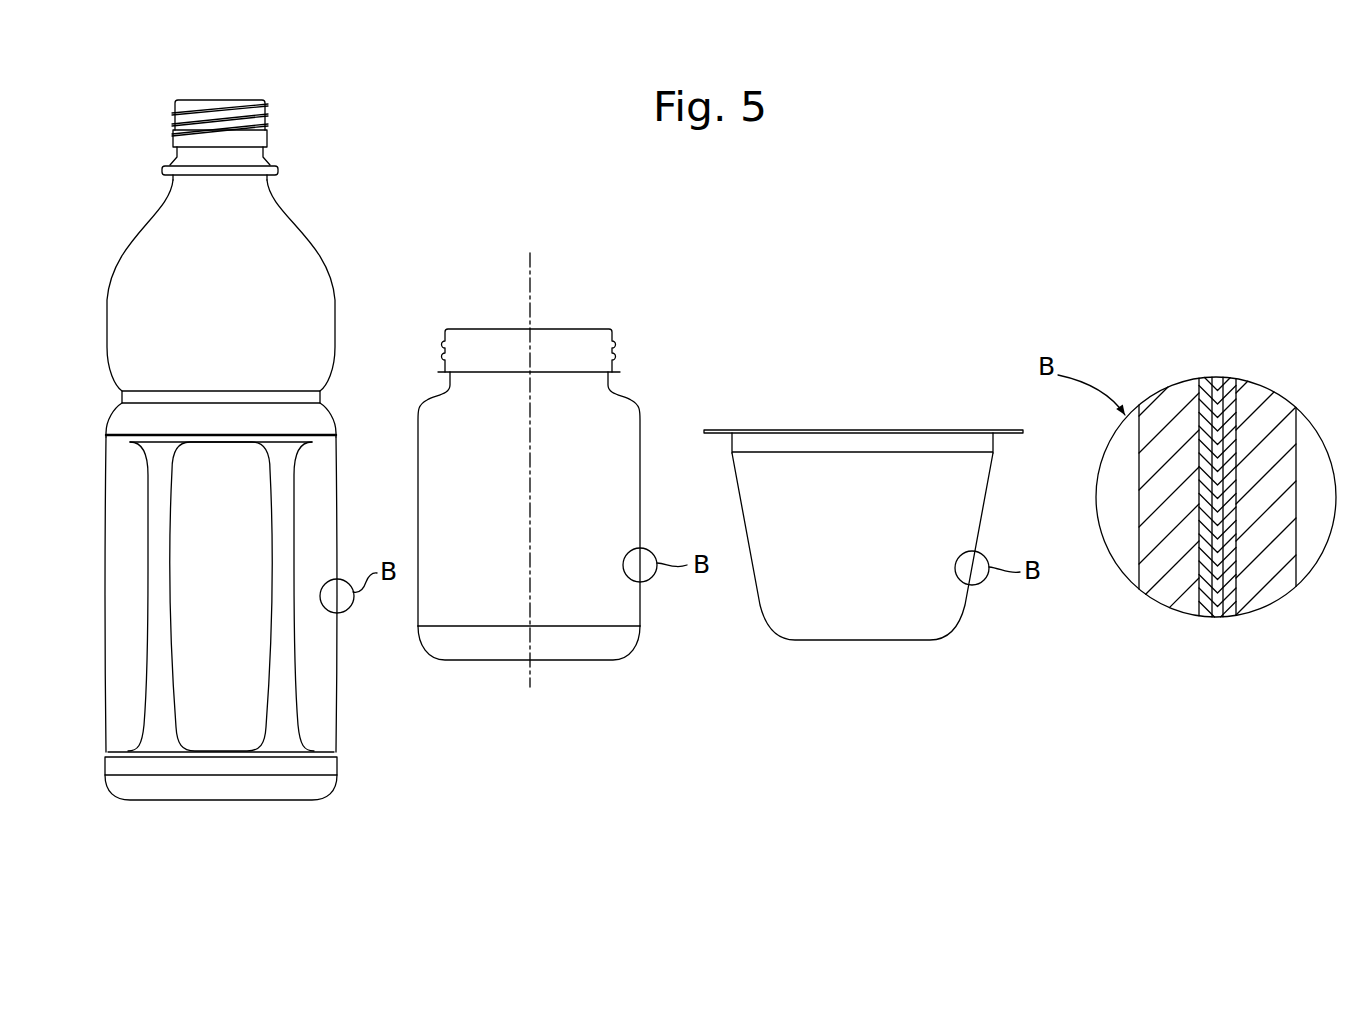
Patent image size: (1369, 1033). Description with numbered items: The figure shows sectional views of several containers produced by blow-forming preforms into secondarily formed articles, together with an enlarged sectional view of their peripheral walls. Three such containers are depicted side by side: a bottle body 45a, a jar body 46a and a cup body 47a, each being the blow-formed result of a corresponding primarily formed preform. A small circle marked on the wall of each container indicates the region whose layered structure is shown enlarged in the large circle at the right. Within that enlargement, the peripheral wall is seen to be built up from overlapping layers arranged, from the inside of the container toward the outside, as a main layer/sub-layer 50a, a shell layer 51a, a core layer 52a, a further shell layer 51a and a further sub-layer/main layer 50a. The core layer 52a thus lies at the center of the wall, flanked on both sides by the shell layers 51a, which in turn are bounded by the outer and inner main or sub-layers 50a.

The bottle body 45a is at (327, 280).
The jar body 46a is at (640, 485).
The cup body 47a is at (987, 492).
The main layer/sub-layer 50a is at (1173, 593).
The shell layer 51a is at (1234, 378).
The core layer 52a is at (1218, 617).